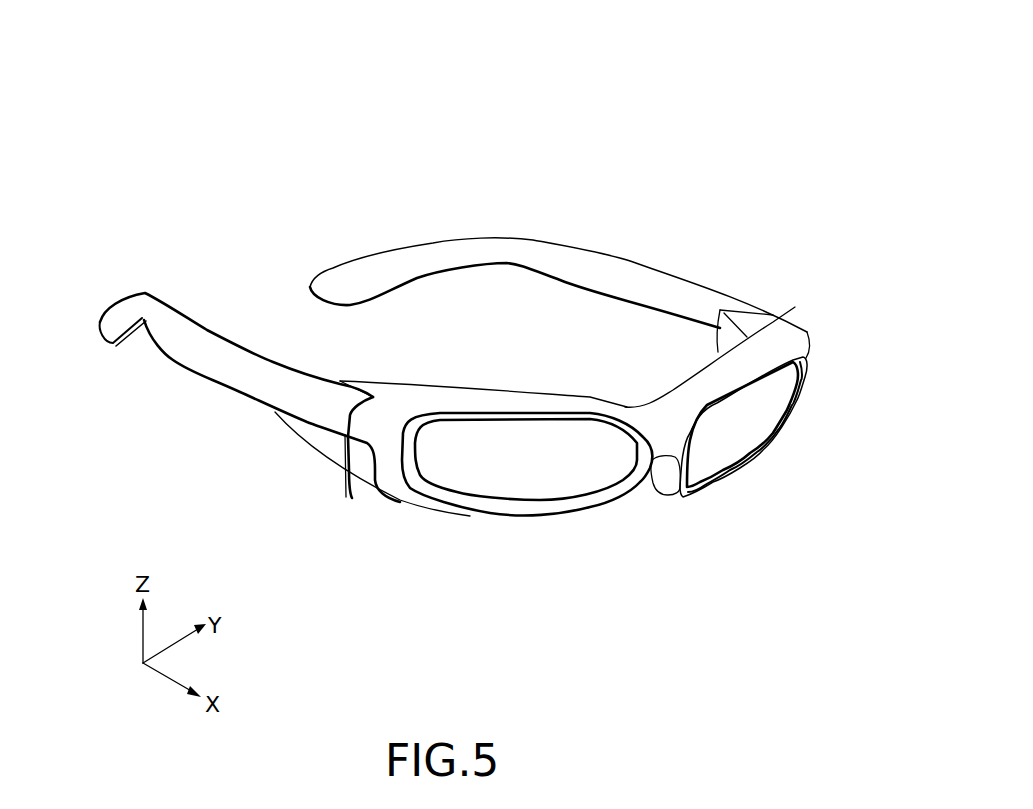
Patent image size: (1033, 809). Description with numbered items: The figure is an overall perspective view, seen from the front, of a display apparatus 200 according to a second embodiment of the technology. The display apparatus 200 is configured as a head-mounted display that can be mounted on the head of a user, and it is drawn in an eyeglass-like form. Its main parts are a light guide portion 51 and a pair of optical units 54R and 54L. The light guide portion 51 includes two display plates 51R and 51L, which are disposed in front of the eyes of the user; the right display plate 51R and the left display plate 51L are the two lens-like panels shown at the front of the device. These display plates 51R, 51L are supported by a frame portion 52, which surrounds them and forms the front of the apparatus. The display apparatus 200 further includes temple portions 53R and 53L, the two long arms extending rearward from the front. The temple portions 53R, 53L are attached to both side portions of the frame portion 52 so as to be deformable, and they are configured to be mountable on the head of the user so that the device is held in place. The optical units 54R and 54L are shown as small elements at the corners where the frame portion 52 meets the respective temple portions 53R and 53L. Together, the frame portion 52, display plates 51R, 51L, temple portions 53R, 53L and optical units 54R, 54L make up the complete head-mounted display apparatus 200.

The display apparatus 200 is at (648, 76).
The light guide portion 51 is at (752, 553).
The display plate 51R is at (587, 468).
The display plate 51L is at (740, 433).
The frame portion 52 is at (623, 406).
The temple portion 53R is at (210, 373).
The temple portion 53L is at (513, 242).
The optical unit 54R is at (318, 447).
The optical unit 54L is at (739, 324).